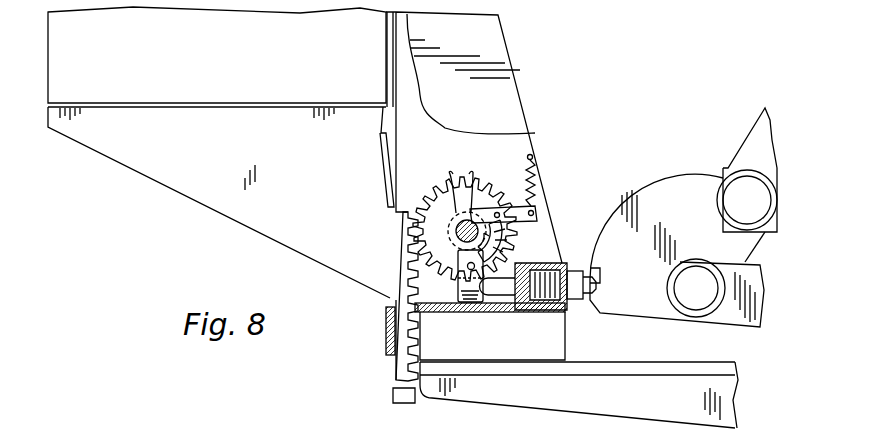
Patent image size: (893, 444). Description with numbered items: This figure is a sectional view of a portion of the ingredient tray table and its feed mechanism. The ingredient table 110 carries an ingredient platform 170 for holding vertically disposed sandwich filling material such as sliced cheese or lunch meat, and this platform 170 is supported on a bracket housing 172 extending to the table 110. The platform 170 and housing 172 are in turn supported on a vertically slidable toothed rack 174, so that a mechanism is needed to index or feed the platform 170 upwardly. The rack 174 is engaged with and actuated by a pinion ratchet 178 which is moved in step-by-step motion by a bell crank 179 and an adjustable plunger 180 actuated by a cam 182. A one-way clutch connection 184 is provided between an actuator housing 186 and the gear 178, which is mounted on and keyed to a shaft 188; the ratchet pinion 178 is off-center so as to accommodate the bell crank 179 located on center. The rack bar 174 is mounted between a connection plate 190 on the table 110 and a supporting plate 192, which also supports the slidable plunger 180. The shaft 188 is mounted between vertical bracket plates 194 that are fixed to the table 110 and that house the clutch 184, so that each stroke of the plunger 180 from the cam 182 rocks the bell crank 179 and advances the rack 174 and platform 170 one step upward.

The ingredient table 110 is at (538, 400).
The ingredient platform 170 is at (102, 107).
The bracket housing 172 is at (172, 172).
The toothed rack 174 is at (399, 337).
The pinion ratchet 178 is at (470, 190).
The bell crank 179 is at (480, 290).
The adjustable plunger 180 is at (568, 298).
The cam 182 is at (677, 188).
The one-way clutch connection 184 is at (504, 256).
The actuator housing 186 is at (508, 240).
The shaft 188 is at (455, 178).
The connection plate 190 is at (390, 314).
The supporting plate 192 is at (436, 312).
The vertical bracket plates 194 is at (512, 91).